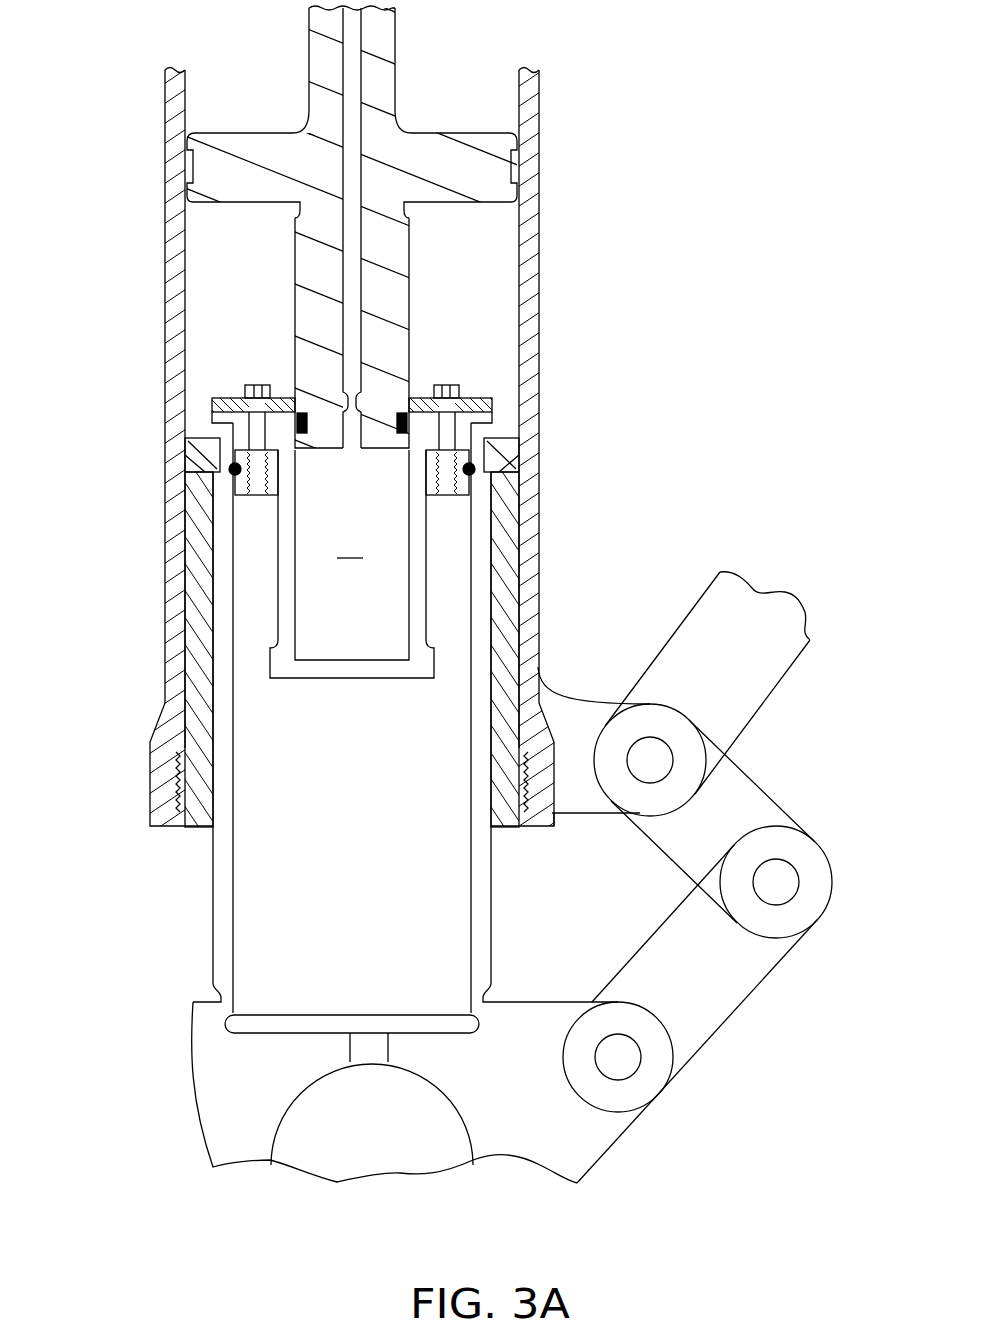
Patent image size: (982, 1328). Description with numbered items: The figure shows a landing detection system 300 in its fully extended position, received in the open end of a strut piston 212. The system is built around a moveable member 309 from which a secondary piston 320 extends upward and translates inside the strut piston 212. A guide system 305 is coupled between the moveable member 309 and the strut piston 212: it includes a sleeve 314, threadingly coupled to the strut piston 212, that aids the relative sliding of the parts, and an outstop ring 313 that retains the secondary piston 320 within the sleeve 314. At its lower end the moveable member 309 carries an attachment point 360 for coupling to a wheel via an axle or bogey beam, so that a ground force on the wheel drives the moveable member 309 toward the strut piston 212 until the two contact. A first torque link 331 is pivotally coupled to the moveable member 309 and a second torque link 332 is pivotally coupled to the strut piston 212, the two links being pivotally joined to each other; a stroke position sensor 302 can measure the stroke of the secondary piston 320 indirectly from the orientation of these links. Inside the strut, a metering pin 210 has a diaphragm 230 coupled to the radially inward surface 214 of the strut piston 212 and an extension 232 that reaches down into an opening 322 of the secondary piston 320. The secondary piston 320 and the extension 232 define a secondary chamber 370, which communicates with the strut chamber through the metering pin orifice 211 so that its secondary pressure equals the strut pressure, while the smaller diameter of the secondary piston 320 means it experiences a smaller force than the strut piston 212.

The metering pin 210 is at (373, 27).
The metering pin orifice 211 is at (343, 60).
The diaphragm 230 is at (248, 150).
The extension 232 is at (383, 307).
The strut piston 212 is at (528, 258).
The radially inward surface 214 is at (185, 247).
The sleeve 314 is at (195, 640).
The outstop ring 313 is at (498, 455).
The opening 322 is at (408, 393).
The secondary chamber 370 is at (371, 635).
The secondary piston 320 is at (213, 883).
The moveable member 309 is at (208, 1093).
The attachment point 360 is at (272, 1138).
The stroke position sensor 302 is at (582, 1002).
The first torque link 331 is at (733, 1010).
The second torque link 332 is at (757, 785).
The guide system 305 is at (140, 472).
The landing detection system 300 is at (684, 491).